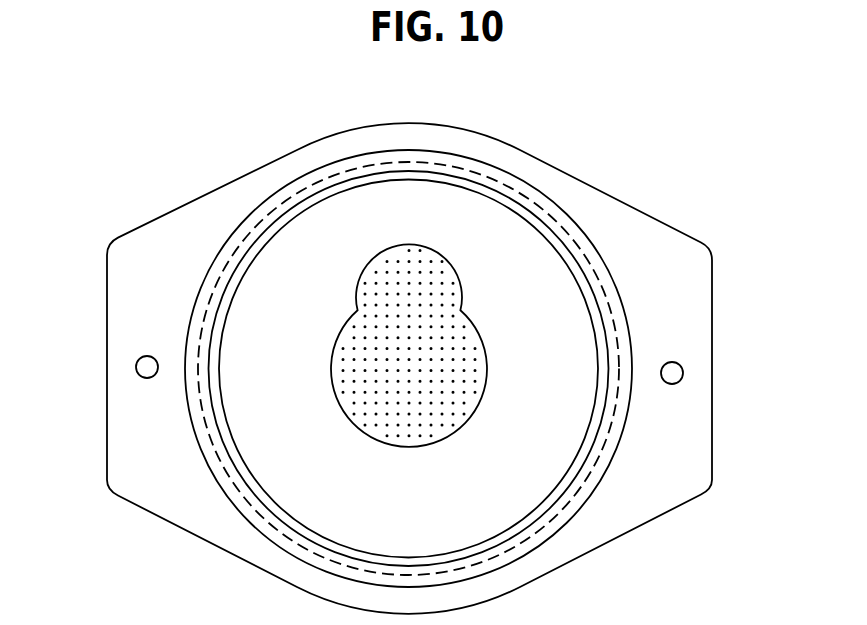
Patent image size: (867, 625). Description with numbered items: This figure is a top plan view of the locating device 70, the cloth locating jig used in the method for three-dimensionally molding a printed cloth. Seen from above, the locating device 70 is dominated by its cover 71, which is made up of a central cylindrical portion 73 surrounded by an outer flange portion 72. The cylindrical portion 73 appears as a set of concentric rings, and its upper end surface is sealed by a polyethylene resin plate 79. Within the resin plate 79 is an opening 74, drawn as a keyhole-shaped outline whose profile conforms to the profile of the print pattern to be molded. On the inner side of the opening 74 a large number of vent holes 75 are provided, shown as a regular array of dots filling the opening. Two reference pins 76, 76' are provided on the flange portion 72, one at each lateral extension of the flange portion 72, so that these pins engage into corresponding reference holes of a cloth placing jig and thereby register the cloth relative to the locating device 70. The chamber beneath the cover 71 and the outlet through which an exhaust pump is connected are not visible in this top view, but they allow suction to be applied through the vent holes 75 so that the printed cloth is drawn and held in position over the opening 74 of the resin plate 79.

The locating device 70 is at (407, 336).
The cover 71 is at (545, 123).
The flange portion 72 is at (594, 215).
The cylindrical portion 73 is at (545, 498).
The opening 74 is at (358, 278).
The vent holes 75 is at (420, 317).
The reference pin 76 is at (722, 307).
The reference pin 76' is at (94, 279).
The polyethylene resin plate 79 is at (297, 465).